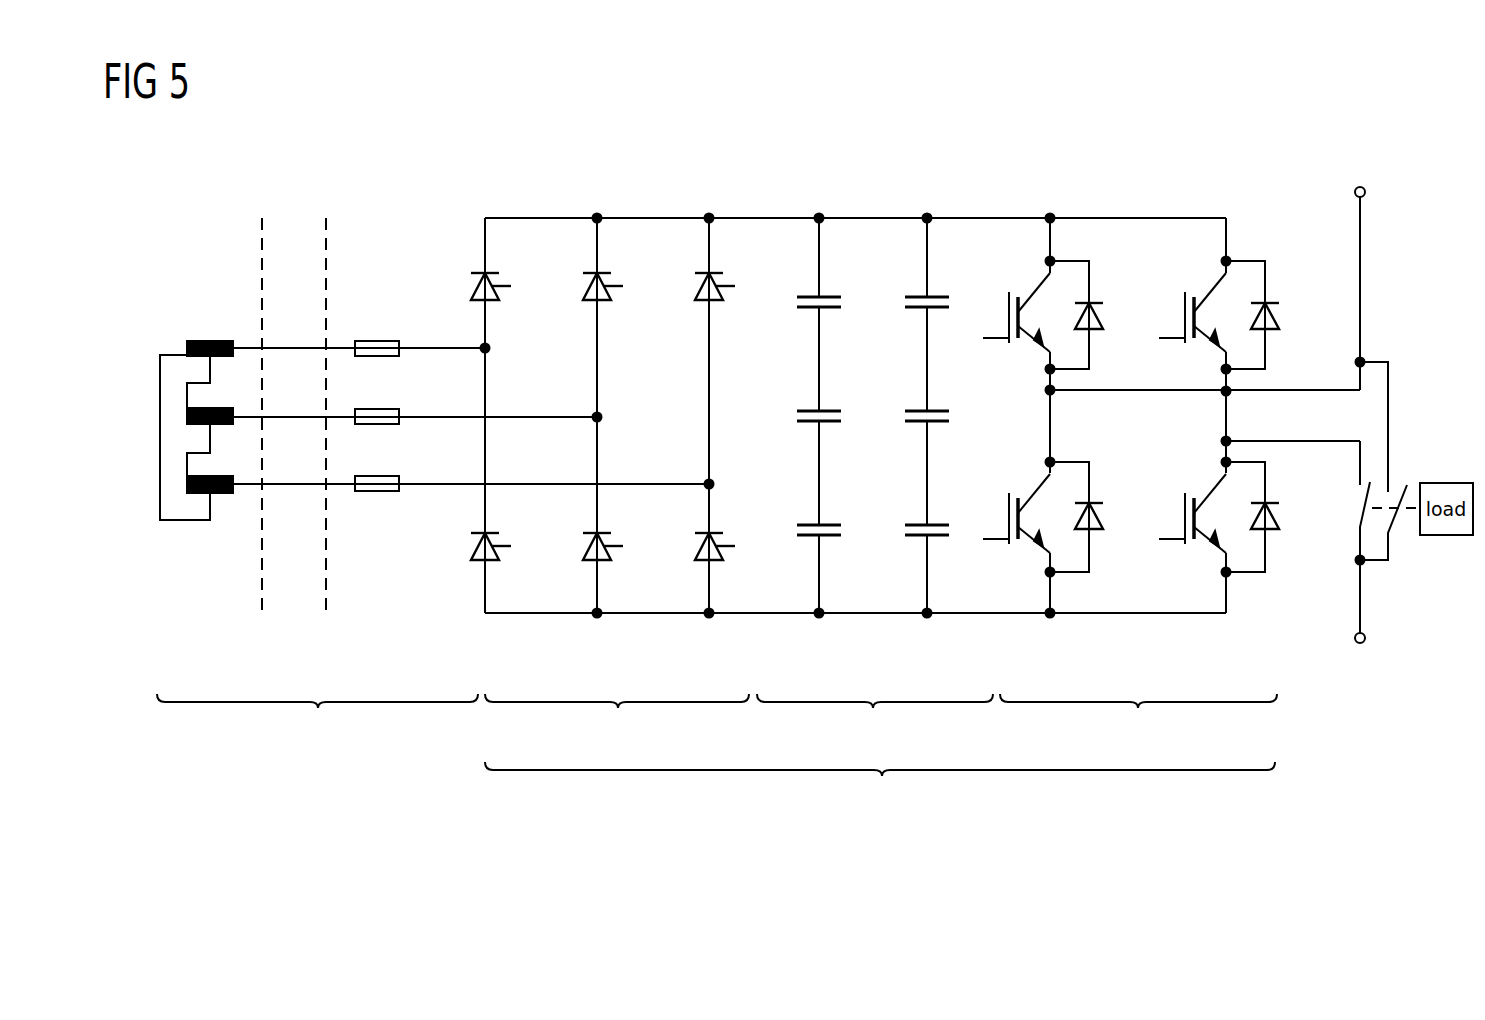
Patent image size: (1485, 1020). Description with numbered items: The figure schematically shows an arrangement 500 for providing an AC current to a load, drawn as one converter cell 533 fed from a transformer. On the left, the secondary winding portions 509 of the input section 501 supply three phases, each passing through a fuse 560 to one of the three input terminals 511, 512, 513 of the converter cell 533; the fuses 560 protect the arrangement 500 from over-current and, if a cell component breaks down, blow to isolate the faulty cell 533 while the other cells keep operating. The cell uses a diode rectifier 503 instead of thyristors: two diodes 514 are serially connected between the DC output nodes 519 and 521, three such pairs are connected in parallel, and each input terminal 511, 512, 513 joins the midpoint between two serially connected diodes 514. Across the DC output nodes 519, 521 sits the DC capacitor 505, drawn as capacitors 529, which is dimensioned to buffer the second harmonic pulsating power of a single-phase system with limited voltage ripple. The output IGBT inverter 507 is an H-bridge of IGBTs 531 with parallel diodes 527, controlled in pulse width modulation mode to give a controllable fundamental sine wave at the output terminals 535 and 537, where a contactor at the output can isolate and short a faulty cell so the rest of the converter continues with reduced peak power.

The arrangement 500 is at (1158, 138).
The secondary winding section 501 is at (317, 722).
The diode rectifier 503 is at (617, 722).
The DC capacitor 505 is at (875, 722).
The output IGBT inverter 507 is at (1138, 722).
The secondary winding portions 509 is at (212, 340).
The input terminal 511 is at (482, 345).
The input terminal 512 is at (596, 414).
The input terminal 513 is at (708, 481).
The diodes 514 is at (470, 284).
The DC output node 519 is at (819, 214).
The DC output node 521 is at (818, 618).
The diode 527 is at (1103, 315).
The capacitor 529 is at (916, 310).
The IGBT 531 is at (1010, 345).
The converter cell 533 is at (880, 791).
The output terminal 535 is at (1350, 191).
The output terminal 537 is at (1350, 639).
The fuses 560 is at (377, 340).